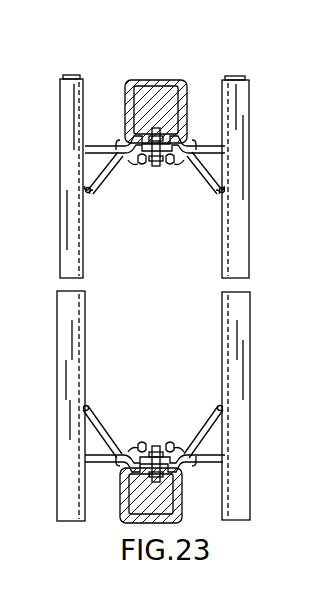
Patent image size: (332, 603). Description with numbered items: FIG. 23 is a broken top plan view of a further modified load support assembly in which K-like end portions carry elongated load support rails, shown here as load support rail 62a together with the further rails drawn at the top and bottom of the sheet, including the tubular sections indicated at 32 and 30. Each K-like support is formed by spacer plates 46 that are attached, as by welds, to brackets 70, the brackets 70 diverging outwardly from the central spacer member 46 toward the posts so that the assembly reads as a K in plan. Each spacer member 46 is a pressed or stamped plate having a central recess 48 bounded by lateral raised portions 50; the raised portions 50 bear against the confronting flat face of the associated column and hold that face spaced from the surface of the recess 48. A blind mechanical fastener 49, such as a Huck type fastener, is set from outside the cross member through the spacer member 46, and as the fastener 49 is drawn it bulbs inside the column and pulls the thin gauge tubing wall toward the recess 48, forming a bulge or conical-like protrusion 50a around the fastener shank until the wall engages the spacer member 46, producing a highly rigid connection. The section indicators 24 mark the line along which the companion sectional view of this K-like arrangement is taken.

The load support rail 62a is at (74, 76).
The upper rail tube 32 is at (160, 80).
The lower rail tube 30 is at (120, 523).
The central recess 48 is at (138, 140).
The lateral raised portion 50 is at (178, 137).
The bulge or conical-like protrusion 50a is at (160, 164).
The blind mechanical fastener 49 is at (142, 158).
The spacer member 46 is at (172, 158).
The bracket 70 is at (100, 186).
The section line 24 is at (40, 240).